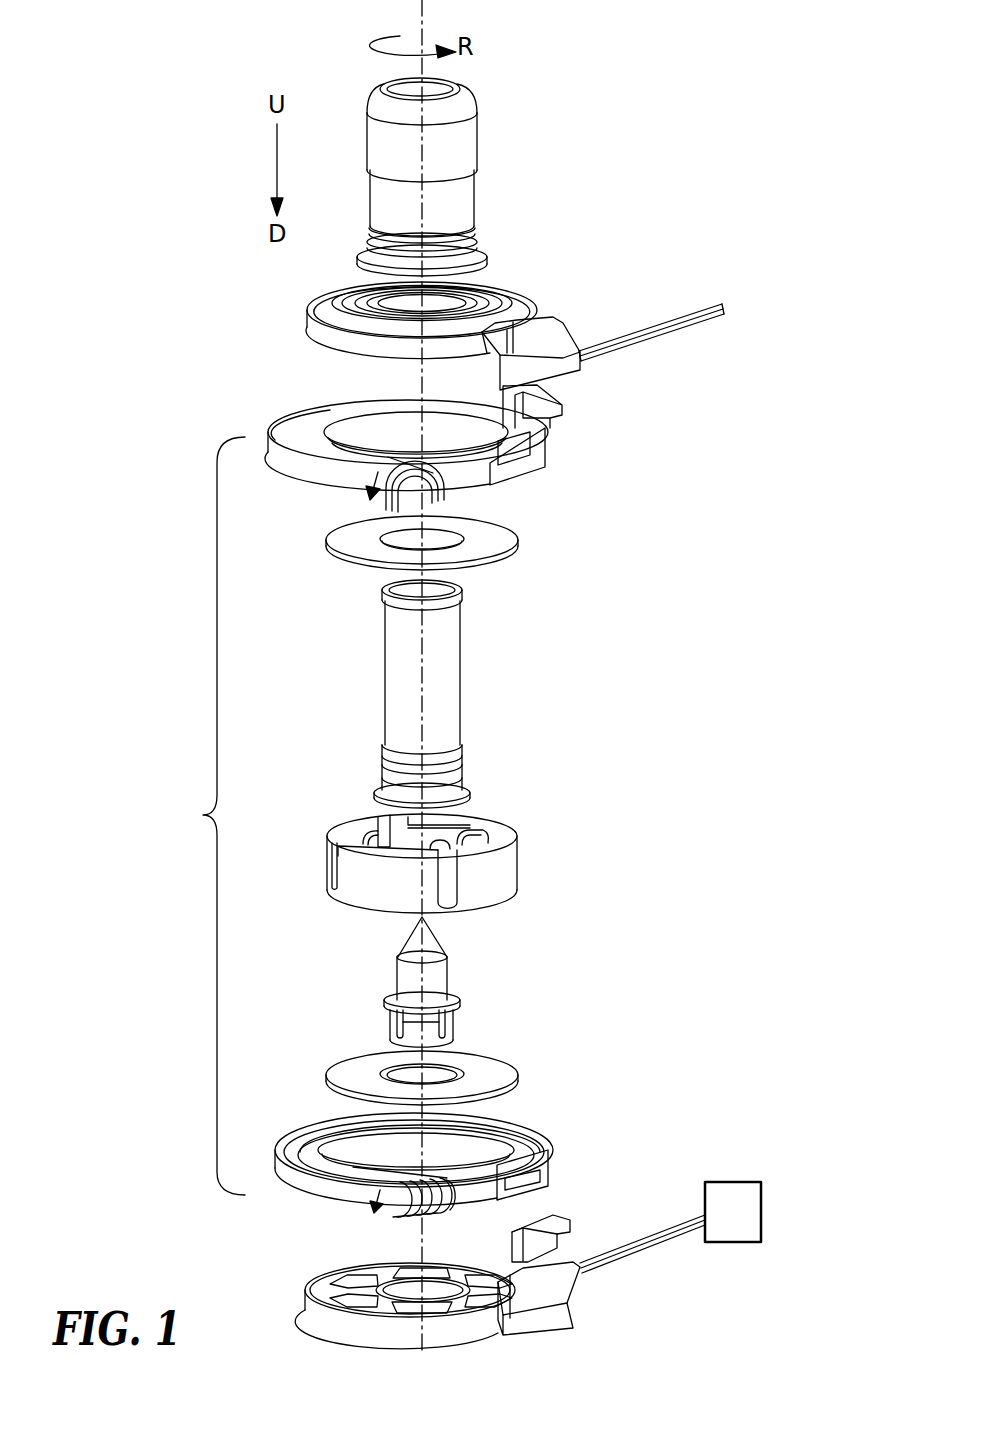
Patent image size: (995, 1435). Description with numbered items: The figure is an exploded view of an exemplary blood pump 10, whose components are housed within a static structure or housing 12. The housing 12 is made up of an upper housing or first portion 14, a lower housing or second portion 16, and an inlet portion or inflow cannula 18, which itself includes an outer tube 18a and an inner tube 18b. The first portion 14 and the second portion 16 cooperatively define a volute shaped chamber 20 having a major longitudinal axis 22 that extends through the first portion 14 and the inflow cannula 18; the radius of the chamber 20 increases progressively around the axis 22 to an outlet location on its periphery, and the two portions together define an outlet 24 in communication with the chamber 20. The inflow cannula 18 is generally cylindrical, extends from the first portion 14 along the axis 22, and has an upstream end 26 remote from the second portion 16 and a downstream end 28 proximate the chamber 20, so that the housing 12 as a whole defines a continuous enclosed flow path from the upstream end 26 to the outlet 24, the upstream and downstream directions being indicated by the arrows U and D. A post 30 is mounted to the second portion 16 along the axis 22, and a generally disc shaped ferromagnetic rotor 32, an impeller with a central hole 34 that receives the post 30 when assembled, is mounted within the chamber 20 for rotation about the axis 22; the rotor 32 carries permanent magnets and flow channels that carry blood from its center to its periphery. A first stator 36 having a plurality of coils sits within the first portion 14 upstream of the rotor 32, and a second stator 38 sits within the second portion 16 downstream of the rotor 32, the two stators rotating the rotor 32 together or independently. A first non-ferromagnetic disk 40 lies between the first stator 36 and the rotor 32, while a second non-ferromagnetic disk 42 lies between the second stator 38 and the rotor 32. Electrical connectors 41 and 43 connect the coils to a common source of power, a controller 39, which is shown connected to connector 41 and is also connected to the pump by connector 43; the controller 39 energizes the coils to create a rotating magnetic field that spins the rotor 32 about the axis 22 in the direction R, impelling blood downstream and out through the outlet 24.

The blood pump 10 is at (663, 180).
The housing 12 is at (200, 816).
The first portion 14 is at (550, 448).
The second portion 16 is at (553, 1158).
The inflow cannula 18 is at (463, 203).
The outer tube 18a is at (467, 152).
The inner tube 18b is at (460, 708).
The volute shaped chamber 20 is at (482, 1140).
The major longitudinal axis 22 is at (420, 13).
The outlet 24 is at (432, 1205).
The upstream end 26 is at (448, 88).
The downstream end 28 is at (487, 260).
The post 30 is at (452, 978).
The rotor 32 is at (517, 880).
The central hole 34 is at (432, 846).
The first stator 36 is at (555, 325).
The second stator 38 is at (565, 1318).
The controller 39 is at (733, 1212).
The first non-ferromagnetic disk 40 is at (518, 538).
The electrical connector 41 is at (655, 1246).
The second non-ferromagnetic disk 42 is at (515, 1063).
The electrical connector 43 is at (637, 348).